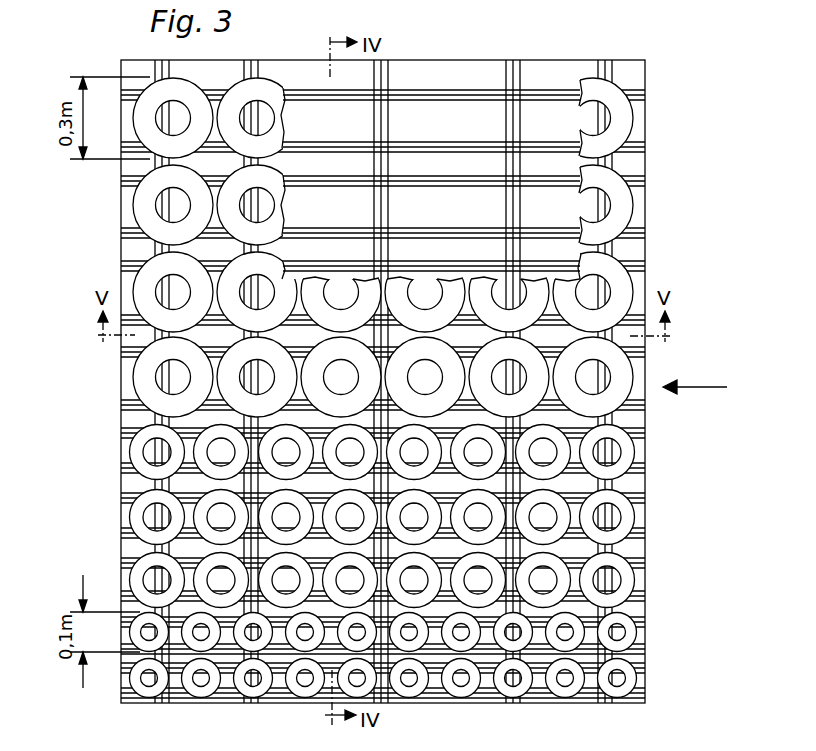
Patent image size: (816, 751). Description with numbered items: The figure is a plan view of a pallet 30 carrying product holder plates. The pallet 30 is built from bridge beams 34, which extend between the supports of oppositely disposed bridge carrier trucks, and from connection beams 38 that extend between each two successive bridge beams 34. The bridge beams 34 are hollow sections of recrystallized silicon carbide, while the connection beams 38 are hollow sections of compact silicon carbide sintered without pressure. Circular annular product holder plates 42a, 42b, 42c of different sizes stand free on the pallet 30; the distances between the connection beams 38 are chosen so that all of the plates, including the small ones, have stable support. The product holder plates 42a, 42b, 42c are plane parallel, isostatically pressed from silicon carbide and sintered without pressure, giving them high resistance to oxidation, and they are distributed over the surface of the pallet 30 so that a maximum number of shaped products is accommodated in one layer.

The pallet 30 is at (638, 549).
The bridge beams 34 is at (380, 205).
The connection beams 38 is at (345, 182).
The product holder plate 42a is at (145, 205).
The product holder plate 42b is at (135, 515).
The product holder plate 42c is at (137, 679).